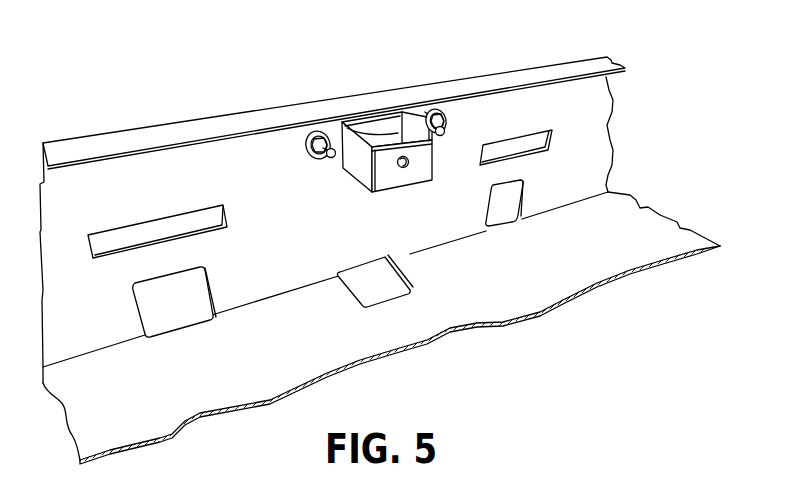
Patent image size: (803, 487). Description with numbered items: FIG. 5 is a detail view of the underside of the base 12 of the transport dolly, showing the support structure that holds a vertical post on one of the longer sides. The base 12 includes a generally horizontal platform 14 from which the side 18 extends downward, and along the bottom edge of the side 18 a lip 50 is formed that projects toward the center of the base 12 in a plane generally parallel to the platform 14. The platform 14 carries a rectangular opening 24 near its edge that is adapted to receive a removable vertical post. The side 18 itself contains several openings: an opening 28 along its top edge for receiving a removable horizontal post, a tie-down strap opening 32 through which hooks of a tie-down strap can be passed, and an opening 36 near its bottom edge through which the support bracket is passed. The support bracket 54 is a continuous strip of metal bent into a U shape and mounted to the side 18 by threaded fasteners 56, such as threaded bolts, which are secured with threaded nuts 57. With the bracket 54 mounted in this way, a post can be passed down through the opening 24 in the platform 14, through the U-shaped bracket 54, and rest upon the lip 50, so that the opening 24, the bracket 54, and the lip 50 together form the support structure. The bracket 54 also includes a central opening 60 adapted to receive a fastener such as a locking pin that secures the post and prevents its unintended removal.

The base 12 is at (510, 48).
The platform 14 is at (640, 222).
The side 18 is at (580, 140).
The opening 24 is at (395, 285).
The opening 28 is at (158, 307).
The tie-down strap opening 32 is at (138, 228).
The opening 36 is at (370, 130).
The lip 50 is at (205, 132).
The support bracket 54 is at (401, 129).
The threaded fastener 56 is at (331, 158).
The threaded nut 57 is at (313, 130).
The central opening 60 is at (408, 166).